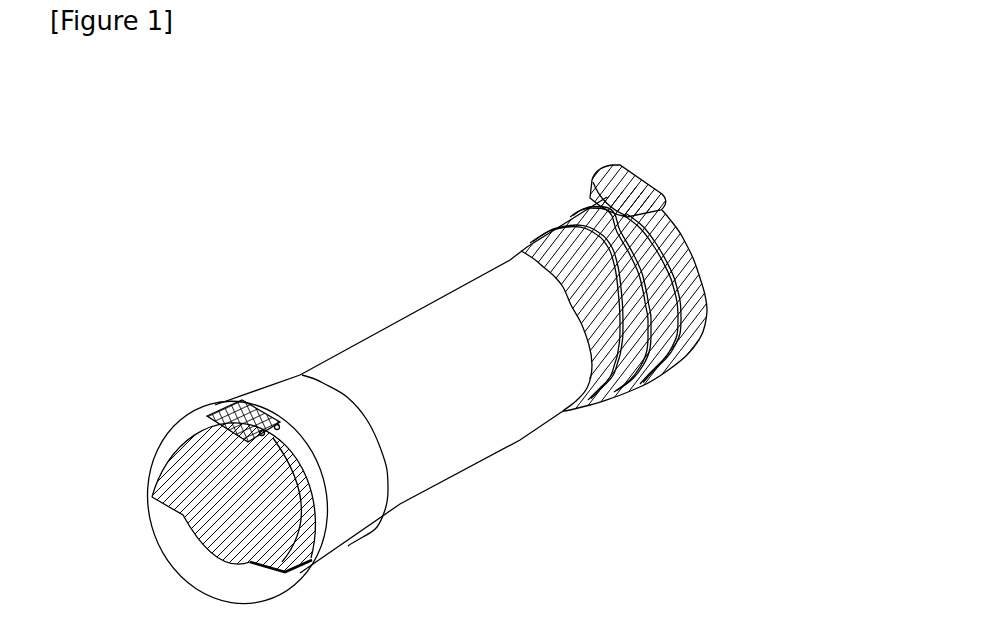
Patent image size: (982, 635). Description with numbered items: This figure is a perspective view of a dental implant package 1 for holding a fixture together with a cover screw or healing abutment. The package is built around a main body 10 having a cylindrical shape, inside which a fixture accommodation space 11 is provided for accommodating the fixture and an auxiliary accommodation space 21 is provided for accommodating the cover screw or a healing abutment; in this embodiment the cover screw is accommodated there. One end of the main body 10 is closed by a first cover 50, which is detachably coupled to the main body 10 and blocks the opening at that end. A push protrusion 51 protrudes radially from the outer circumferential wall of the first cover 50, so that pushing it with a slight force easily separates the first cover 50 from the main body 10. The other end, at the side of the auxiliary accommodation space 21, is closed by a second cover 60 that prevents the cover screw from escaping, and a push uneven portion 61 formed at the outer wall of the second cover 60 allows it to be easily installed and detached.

The dental implant package 1 is at (138, 124).
The main body 10 is at (296, 372).
The fixture accommodation space 11 is at (503, 419).
The auxiliary accommodation space 21 is at (357, 507).
The first cover 50 is at (690, 243).
The push protrusion 51 is at (643, 178).
The second cover 60 is at (150, 478).
The push uneven portion 61 is at (225, 416).